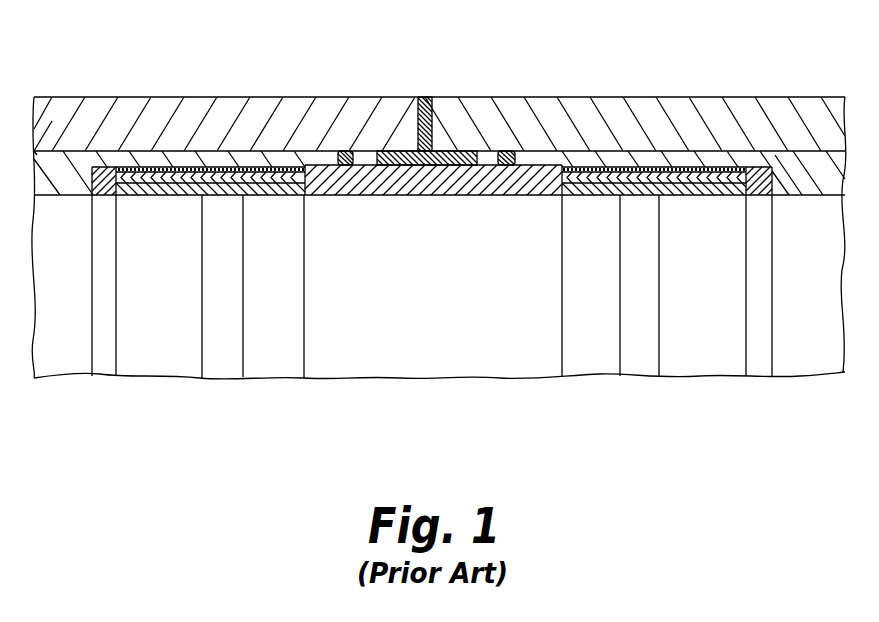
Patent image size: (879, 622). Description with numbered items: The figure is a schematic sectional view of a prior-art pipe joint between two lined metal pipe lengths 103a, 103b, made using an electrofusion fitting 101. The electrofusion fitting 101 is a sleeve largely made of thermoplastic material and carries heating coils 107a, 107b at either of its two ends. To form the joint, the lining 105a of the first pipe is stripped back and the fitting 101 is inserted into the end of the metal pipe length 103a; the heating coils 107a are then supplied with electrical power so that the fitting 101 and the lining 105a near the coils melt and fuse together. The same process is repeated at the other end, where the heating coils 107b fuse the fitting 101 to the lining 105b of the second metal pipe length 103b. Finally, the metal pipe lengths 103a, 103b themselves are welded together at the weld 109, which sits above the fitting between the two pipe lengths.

The electrofusion fitting 101 is at (455, 195).
The metal pipe length 103a is at (195, 113).
The metal pipe length 103b is at (624, 112).
The lining 105a is at (83, 162).
The lining 105b is at (763, 160).
The heating coils 107a is at (155, 168).
The heating coils 107b is at (596, 166).
The weld 109 is at (425, 97).